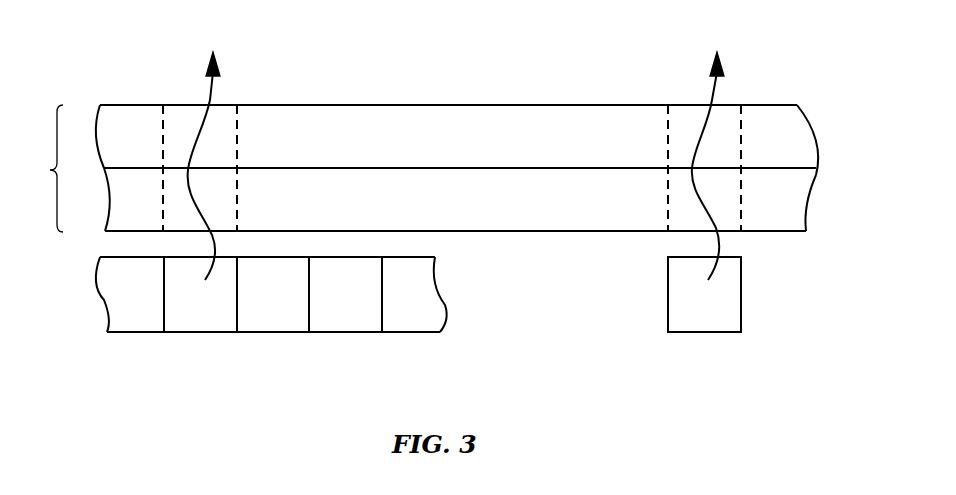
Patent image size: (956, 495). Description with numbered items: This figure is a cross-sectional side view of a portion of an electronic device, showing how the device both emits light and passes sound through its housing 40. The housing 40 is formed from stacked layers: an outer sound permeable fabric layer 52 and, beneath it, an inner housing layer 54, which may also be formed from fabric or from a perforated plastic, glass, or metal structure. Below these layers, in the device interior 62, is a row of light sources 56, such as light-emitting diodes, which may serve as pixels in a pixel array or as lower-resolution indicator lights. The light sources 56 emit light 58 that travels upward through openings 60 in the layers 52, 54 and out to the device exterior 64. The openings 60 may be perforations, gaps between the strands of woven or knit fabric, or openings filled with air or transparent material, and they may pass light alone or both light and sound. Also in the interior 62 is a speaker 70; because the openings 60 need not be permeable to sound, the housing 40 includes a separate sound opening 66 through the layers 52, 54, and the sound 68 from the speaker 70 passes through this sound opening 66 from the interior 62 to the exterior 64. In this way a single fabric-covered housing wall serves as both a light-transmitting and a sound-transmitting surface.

The housing 40 is at (42, 168).
The outer sound permeable fabric layer 52 is at (808, 140).
The inner housing layer 54 is at (803, 190).
The light sources 56 is at (138, 318).
The light 58 is at (216, 84).
The openings 60 is at (238, 140).
The device interior 62 is at (446, 243).
The device exterior 64 is at (398, 47).
The sound opening 66 is at (742, 140).
The sound 68 is at (720, 84).
The speaker 70 is at (733, 302).